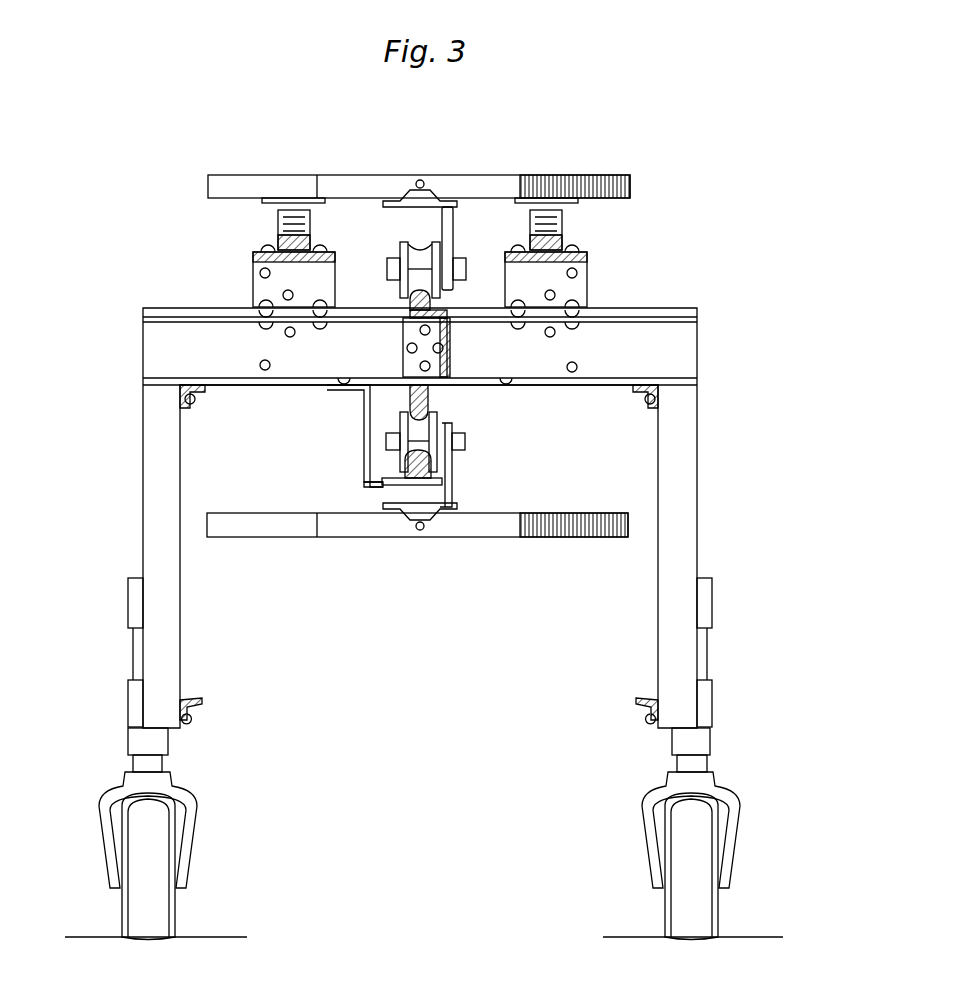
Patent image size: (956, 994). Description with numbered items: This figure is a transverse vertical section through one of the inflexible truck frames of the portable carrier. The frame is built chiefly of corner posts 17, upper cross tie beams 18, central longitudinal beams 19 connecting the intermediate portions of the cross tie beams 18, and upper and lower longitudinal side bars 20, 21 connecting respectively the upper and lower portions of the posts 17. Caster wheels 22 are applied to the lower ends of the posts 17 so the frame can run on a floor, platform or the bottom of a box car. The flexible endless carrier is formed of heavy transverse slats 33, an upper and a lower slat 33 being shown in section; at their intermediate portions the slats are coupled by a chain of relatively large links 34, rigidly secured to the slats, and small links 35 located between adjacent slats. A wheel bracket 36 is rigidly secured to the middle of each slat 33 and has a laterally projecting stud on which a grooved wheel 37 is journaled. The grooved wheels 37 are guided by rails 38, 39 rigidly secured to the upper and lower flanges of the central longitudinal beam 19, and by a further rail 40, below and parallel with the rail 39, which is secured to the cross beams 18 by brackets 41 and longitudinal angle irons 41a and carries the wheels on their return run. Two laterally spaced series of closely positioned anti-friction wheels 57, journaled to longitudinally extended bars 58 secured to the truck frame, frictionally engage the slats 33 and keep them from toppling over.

The corner posts 17 is at (715, 506).
The upper cross tie beams 18 is at (420, 347).
The central longitudinal beams 19 is at (452, 352).
The upper longitudinal side bars 20 is at (196, 396).
The lower longitudinal side bars 21 is at (198, 702).
The caster wheels 22 is at (424, 866).
The transverse slats 33 is at (610, 185).
The large links 34 is at (443, 200).
The small links 35 is at (424, 181).
The wheel bracket 36 is at (453, 248).
The grooved wheel 37 is at (410, 255).
The upper rail 38 is at (410, 297).
The lower rail 39 is at (430, 404).
The return rail 40 is at (420, 480).
The brackets 41 is at (364, 418).
The longitudinal angle irons 41a is at (378, 488).
The anti-friction wheels 57 is at (290, 220).
The longitudinally extended bars 58 is at (280, 245).